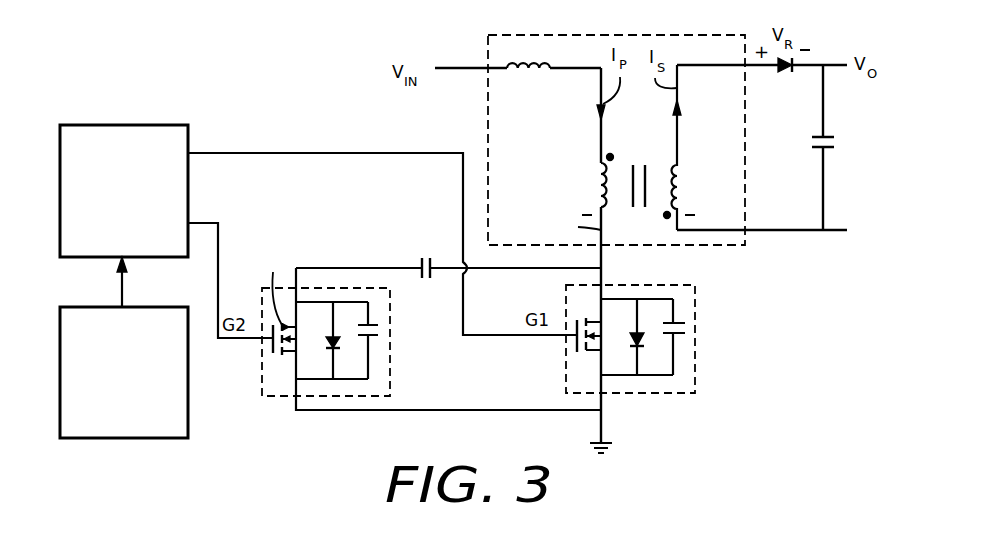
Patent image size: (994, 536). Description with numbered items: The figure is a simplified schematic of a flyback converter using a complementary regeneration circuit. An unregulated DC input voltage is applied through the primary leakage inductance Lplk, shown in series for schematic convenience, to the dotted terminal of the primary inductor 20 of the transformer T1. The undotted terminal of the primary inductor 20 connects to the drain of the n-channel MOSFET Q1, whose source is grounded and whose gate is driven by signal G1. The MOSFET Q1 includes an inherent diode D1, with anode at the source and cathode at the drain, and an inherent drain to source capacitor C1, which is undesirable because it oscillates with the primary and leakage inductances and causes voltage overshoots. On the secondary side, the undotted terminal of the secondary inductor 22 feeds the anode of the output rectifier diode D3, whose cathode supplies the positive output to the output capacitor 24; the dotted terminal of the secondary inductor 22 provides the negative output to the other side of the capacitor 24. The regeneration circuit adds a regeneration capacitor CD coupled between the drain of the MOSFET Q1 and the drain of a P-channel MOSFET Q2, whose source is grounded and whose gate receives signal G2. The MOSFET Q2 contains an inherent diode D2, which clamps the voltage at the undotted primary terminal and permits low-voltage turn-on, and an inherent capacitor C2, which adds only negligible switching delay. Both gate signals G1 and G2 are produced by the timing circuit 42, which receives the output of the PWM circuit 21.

The timing circuit 42 is at (107, 125).
The pulse-width modulation (PWM) circuit 21 is at (85, 307).
The primary inductor 20 is at (600, 173).
The secondary inductor 22 is at (670, 163).
The output capacitor 24 is at (826, 150).
The transformer T1 is at (518, 33).
The n-channel MOSFET Q1 is at (610, 393).
The P-channel MOSFET Q2 is at (272, 396).
The inherent diode D1 is at (640, 337).
The inherent diode D2 is at (337, 340).
The output rectifier diode D3 is at (784, 74).
The inherent drain to source capacitor C1 is at (678, 334).
The inherent capacitor C2 is at (373, 336).
The regeneration capacitor CD is at (420, 265).
The primary leakage inductance Lplk is at (528, 85).